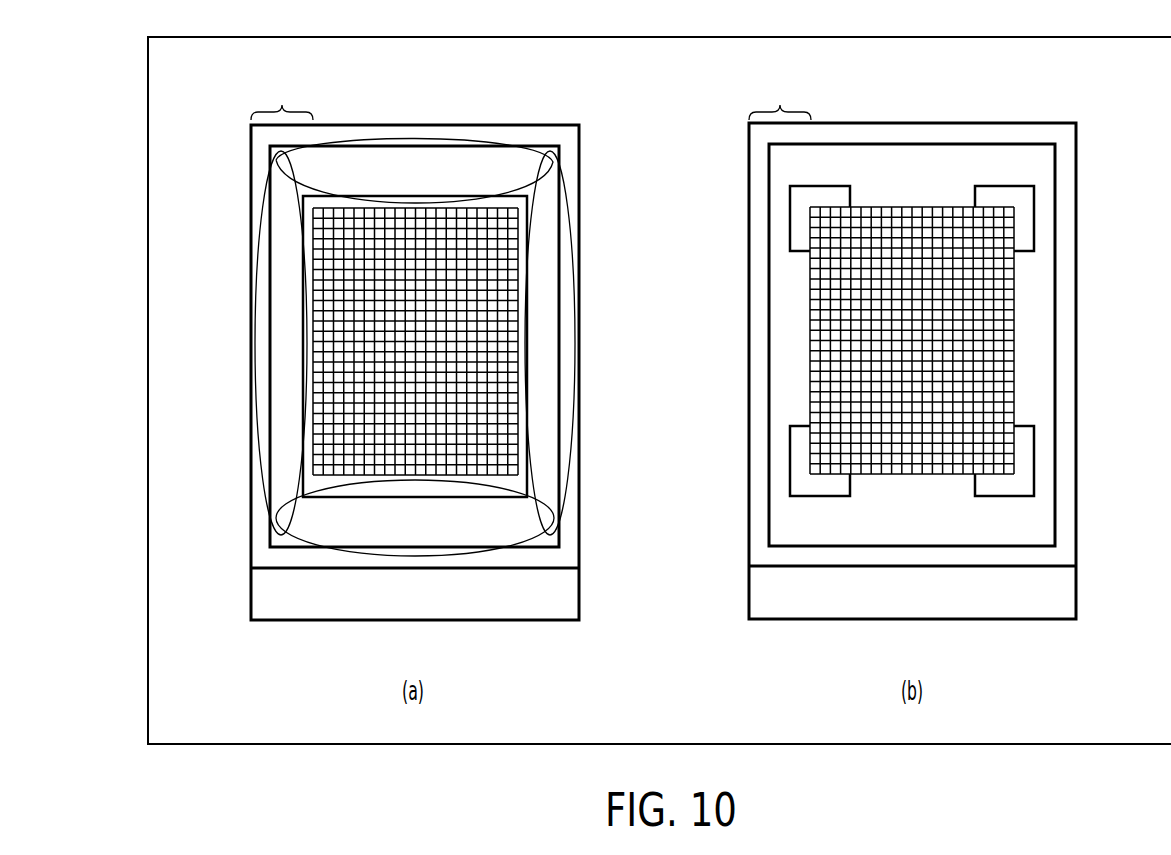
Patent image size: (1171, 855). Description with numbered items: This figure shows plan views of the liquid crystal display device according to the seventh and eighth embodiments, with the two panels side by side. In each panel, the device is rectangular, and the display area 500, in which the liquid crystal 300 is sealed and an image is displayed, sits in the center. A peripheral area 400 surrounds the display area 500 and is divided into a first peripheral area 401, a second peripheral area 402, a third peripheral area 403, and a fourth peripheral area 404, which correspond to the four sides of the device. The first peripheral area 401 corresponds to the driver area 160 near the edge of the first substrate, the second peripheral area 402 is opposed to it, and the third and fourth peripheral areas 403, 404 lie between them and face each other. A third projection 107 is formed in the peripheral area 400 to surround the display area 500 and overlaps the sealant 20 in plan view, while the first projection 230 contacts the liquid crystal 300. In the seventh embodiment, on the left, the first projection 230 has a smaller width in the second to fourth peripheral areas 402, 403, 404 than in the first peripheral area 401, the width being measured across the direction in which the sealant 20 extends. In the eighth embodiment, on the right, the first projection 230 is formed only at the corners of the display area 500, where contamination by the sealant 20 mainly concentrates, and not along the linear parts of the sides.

The sealant 20 is at (550, 310).
The third projection 107 is at (568, 540).
The driver area 160 is at (568, 594).
The first projection 230 is at (527, 477).
The liquid crystal 300 is at (402, 235).
The display area 500 is at (663, 272).
The peripheral area 400 is at (531, 96).
The first peripheral area 401 is at (300, 545).
The second peripheral area 402 is at (527, 158).
The third peripheral area 403 is at (258, 222).
The fourth peripheral area 404 is at (575, 232).